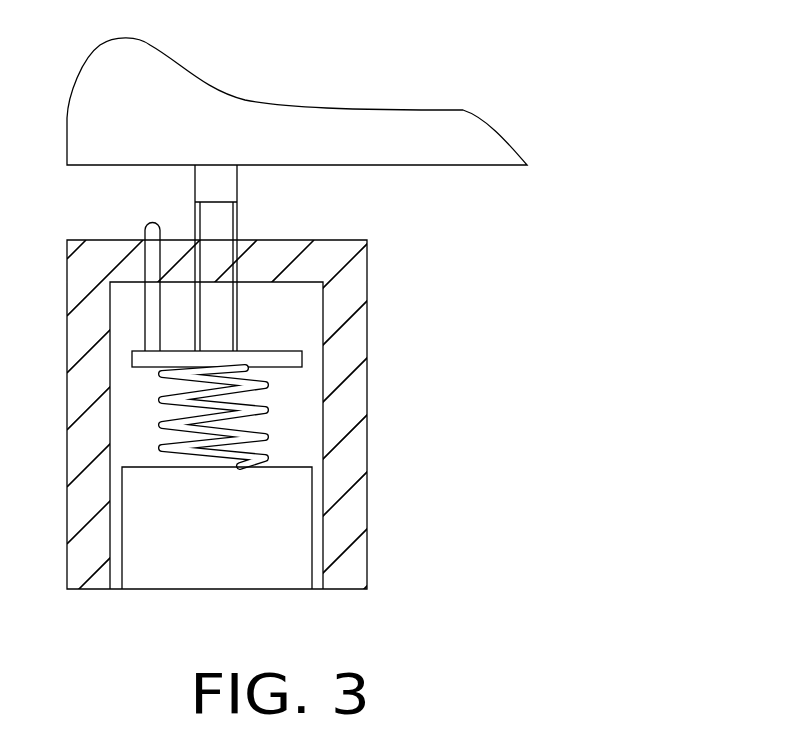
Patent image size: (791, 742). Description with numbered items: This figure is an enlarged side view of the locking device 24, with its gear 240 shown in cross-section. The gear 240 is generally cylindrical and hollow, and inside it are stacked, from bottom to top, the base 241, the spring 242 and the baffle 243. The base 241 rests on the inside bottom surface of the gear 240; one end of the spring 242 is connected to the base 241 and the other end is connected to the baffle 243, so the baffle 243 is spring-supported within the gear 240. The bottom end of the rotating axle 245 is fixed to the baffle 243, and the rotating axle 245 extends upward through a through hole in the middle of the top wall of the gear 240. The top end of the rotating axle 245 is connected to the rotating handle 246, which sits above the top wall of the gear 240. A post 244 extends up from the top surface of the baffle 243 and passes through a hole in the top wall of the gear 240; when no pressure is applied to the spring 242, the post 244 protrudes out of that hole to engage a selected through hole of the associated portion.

The locking device 24 is at (262, 48).
The gear 240 is at (340, 298).
The base 241 is at (283, 500).
The spring 242 is at (257, 410).
The baffle 243 is at (277, 360).
The post 244 is at (152, 236).
The rotating axle 245 is at (222, 225).
The rotating handle 246 is at (423, 140).